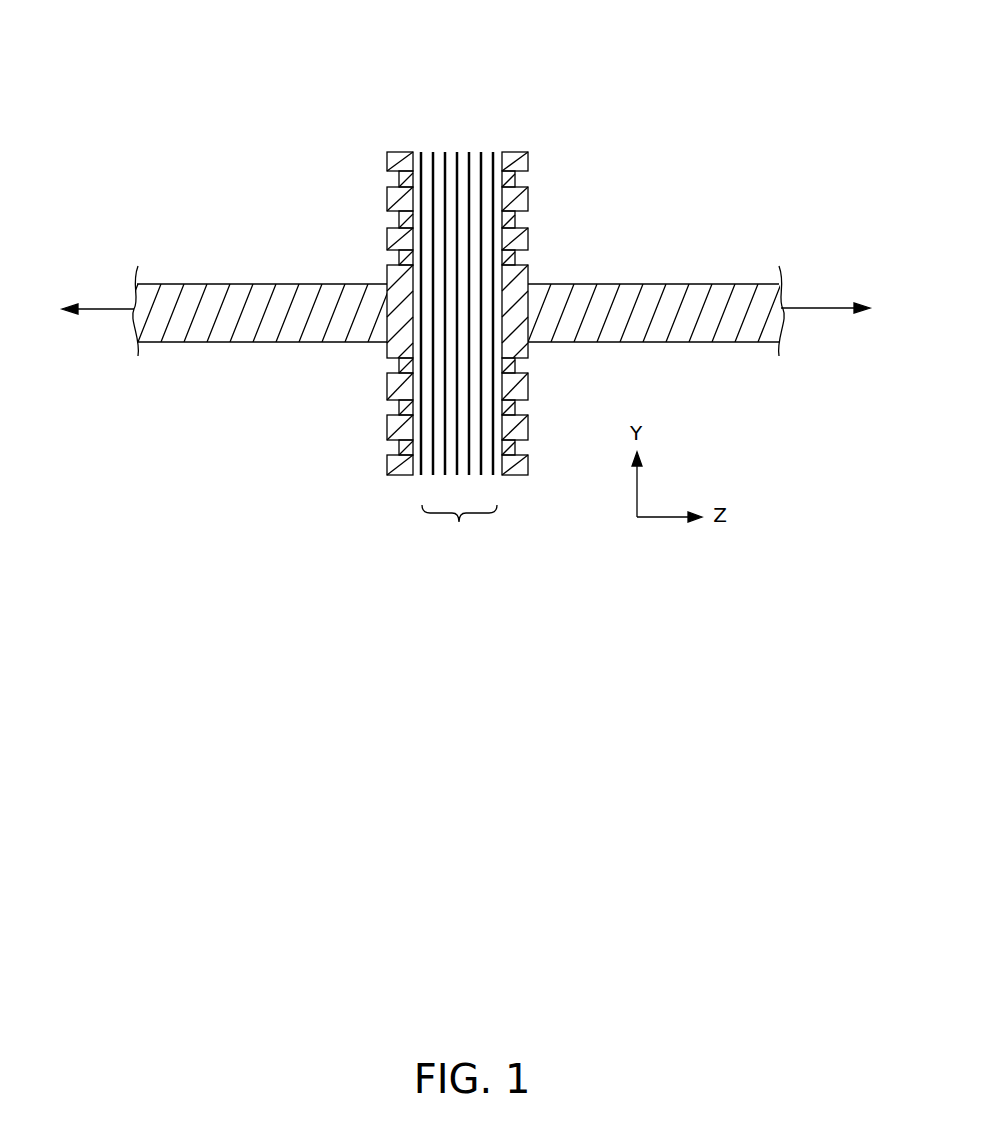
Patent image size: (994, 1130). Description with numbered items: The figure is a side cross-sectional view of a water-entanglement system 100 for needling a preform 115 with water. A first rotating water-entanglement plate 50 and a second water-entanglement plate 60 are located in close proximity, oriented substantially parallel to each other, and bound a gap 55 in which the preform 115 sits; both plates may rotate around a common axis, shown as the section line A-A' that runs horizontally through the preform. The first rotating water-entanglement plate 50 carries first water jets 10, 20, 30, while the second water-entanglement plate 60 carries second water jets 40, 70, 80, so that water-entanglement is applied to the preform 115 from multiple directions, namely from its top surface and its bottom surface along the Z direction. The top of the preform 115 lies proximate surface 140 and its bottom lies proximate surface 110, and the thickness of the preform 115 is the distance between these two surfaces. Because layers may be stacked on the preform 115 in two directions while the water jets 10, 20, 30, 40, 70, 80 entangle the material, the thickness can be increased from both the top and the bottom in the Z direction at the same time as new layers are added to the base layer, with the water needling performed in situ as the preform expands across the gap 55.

The water-entanglement system 100 is at (470, 293).
The water jet 10 is at (516, 256).
The water jet 20 is at (516, 218).
The water jet 30 is at (516, 178).
The water jet 40 is at (398, 261).
The first rotating water-entanglement plate 50 is at (518, 152).
The second water-entanglement plate 60 is at (397, 152).
The water jet 70 is at (398, 221).
The water jet 80 is at (398, 182).
The surface 110 is at (500, 152).
The preform 115 is at (440, 152).
The surface 140 is at (426, 153).
The gap 55 is at (459, 530).